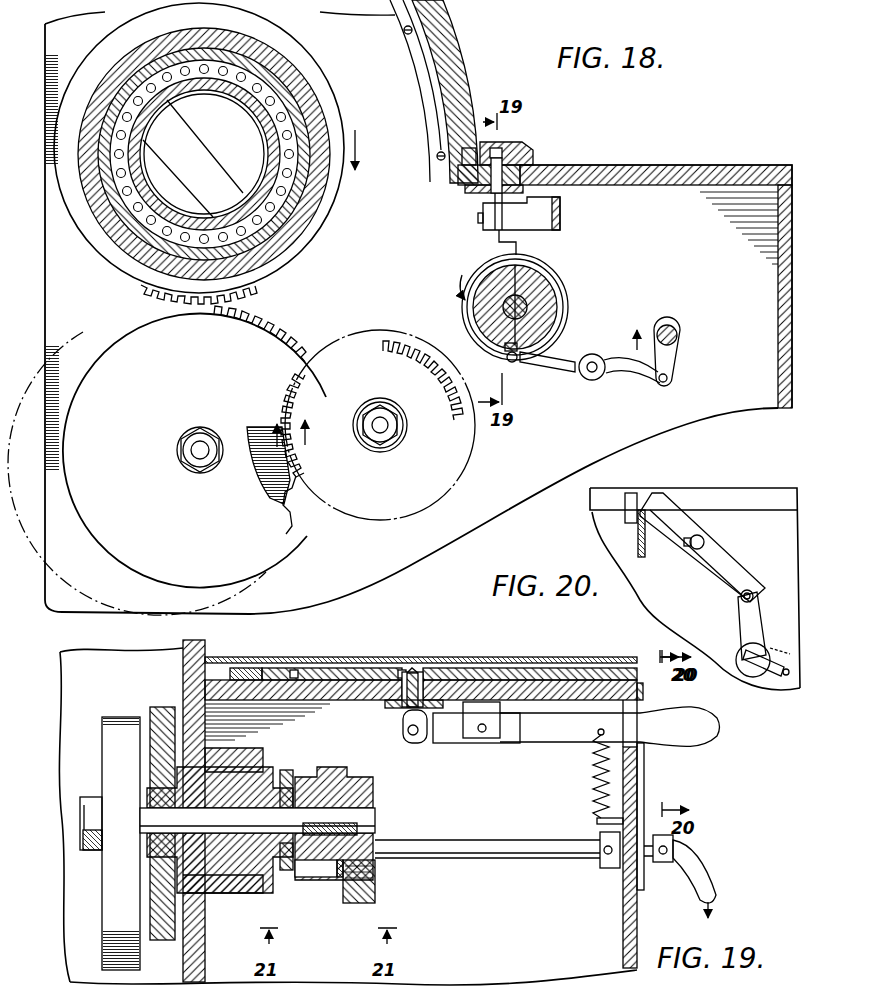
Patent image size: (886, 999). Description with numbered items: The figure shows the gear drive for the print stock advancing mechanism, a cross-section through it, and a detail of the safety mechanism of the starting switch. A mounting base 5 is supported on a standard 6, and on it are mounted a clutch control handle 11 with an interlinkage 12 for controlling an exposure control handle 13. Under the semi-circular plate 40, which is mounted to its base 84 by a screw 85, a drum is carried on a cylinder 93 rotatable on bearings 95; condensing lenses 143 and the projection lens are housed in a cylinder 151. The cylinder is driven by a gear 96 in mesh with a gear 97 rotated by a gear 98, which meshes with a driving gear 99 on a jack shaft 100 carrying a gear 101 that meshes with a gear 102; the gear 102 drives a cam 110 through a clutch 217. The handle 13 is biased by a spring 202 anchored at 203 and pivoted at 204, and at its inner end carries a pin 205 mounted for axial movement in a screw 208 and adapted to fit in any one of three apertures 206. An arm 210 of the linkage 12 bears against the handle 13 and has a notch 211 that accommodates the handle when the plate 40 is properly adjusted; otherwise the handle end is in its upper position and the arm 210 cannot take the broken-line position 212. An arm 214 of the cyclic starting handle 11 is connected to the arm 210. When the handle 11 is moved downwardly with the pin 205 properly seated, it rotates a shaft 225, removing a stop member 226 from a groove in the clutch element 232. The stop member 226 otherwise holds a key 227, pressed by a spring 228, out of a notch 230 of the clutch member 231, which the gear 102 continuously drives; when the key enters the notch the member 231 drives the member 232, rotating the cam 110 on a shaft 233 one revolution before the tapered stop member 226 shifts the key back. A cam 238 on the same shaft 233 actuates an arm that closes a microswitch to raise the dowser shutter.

In FIG. 18, the mounting base 5 is at (653, 165).
In FIG. 20, the mounting base 5 is at (658, 598).
In FIG. 19, the mounting base 5 is at (622, 936).
In FIG. 18, the standard 6 is at (675, 354).
In FIG. 20, the clutch control handle 11 is at (776, 655).
In FIG. 19, the clutch control handle 11 is at (714, 871).
In FIG. 20, the interlinkage 12 is at (700, 589).
In FIG. 19, the interlinkage 12 is at (658, 776).
In FIG. 18, the exposure control handle 13 is at (561, 213).
In FIG. 20, the exposure control handle 13 is at (644, 552).
In FIG. 19, the exposure control handle 13 is at (718, 728).
In FIG. 18, the plate 40 is at (471, 75).
In FIG. 19, the plate 40 is at (387, 657).
In FIG. 18, the base 84 is at (462, 178).
In FIG. 19, the base 84 is at (491, 672).
In FIG. 18, the screw 85 is at (466, 158).
In FIG. 18, the cylinder 93 is at (294, 80).
In FIG. 18, the bearings 95 is at (281, 99).
In FIG. 18, the gear 96 is at (252, 296).
In FIG. 18, the gear 97 is at (284, 328).
In FIG. 18, the gear 98 is at (287, 480).
In FIG. 18, the driving gear 99 is at (302, 463).
In FIG. 18, the jack shaft 100 is at (384, 433).
In FIG. 18, the gear 101 is at (452, 420).
In FIG. 18, the gear 102 is at (392, 345).
In FIG. 19, the gear 102 is at (165, 707).
In FIG. 19, the cam 110 is at (115, 925).
In FIG. 18, the condensing lenses 143 is at (204, 154).
In FIG. 18, the cylinder 151 is at (247, 82).
In FIG. 19, the spring 202 is at (596, 791).
In FIG. 19, the spring anchor 203 is at (597, 823).
In FIG. 18, the pivot 204 is at (497, 236).
In FIG. 19, the pivot 204 is at (483, 733).
In FIG. 18, the pin 205 is at (490, 184).
In FIG. 19, the pin 205 is at (410, 703).
In FIG. 18, the apertures 206 is at (534, 154).
In FIG. 19, the apertures 206 is at (358, 670).
In FIG. 18, the screw 208 is at (480, 204).
In FIG. 19, the screw 208 is at (385, 704).
In FIG. 20, the arm 210 is at (720, 549).
In FIG. 19, the arm 210 is at (644, 694).
In FIG. 20, the notch 211 is at (625, 516).
In FIG. 20, the broken-line position 212 is at (700, 522).
In FIG. 20, the arm 214 is at (750, 613).
In FIG. 18, the clutch 217 is at (562, 267).
In FIG. 19, the clutch 217 is at (386, 793).
In FIG. 18, the shaft 225 is at (676, 331).
In FIG. 19, the shaft 225 is at (543, 852).
In FIG. 18, the stop member 226 is at (466, 338).
In FIG. 19, the stop member 226 is at (328, 878).
In FIG. 19, the key 227 is at (308, 878).
In FIG. 19, the spring 228 is at (375, 868).
In FIG. 19, the notch 230 is at (290, 788).
In FIG. 19, the clutch member 231 is at (286, 872).
In FIG. 18, the clutch member 232 is at (545, 288).
In FIG. 19, the clutch member 232 is at (362, 804).
In FIG. 18, the shaft 233 is at (528, 308).
In FIG. 19, the shaft 233 is at (257, 820).
In FIG. 19, the cam 238 is at (96, 855).